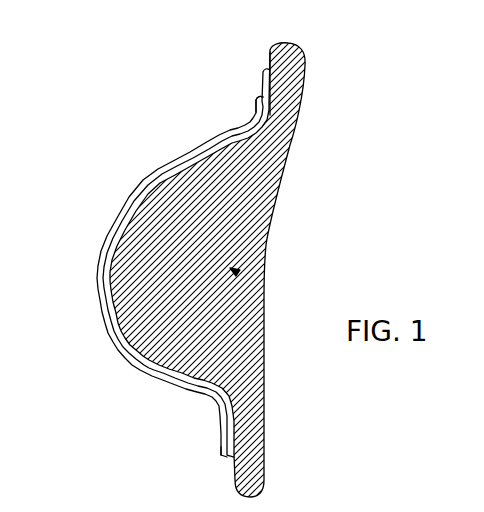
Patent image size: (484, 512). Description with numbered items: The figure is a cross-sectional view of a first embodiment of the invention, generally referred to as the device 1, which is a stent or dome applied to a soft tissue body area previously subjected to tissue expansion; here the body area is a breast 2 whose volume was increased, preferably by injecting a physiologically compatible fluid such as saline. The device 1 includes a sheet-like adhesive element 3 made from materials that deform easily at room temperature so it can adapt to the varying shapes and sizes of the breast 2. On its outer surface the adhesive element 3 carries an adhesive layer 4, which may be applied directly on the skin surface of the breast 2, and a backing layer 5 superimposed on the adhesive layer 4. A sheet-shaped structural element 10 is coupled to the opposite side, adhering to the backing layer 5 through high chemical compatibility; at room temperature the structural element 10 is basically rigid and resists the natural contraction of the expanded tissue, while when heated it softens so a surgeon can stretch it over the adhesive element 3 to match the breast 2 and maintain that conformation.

The device 1 is at (108, 186).
The breast 2 is at (267, 243).
The adhesive element 3 is at (253, 80).
The adhesive layer 4 is at (266, 281).
The backing layer 5 is at (265, 303).
The structural element 10 is at (187, 152).